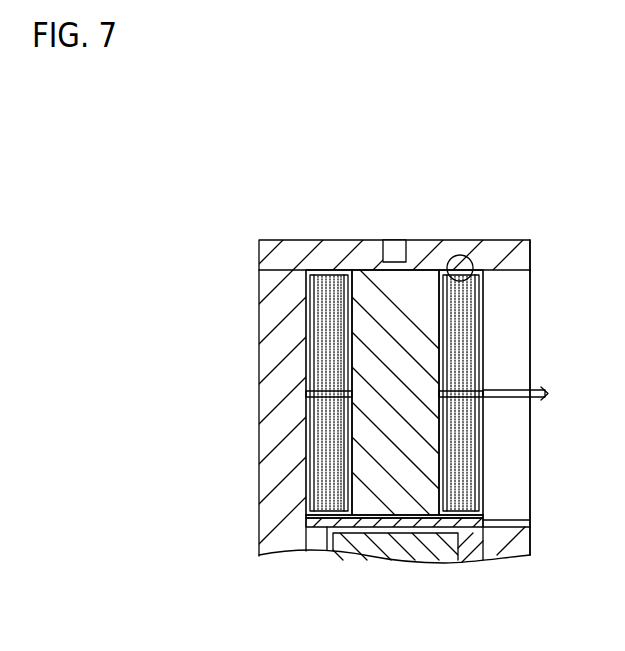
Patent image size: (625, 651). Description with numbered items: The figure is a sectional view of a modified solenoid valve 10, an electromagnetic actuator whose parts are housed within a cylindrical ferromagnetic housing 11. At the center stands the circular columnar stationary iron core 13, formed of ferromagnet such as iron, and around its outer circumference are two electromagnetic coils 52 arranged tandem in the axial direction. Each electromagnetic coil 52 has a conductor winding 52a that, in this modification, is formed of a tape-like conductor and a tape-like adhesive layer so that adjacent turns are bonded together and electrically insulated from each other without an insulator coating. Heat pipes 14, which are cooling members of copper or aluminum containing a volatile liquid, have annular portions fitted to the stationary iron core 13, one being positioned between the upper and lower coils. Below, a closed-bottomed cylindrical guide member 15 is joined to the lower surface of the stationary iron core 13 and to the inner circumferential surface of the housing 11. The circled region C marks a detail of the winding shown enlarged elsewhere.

The solenoid valve 10 is at (509, 235).
The housing 11 is at (532, 257).
The stationary iron core 13 is at (369, 288).
The heat pipe 14 is at (513, 390).
The guide member 15 is at (325, 540).
The electromagnetic coil 52 is at (303, 328).
The conductor winding 52a is at (308, 335).
The region C is at (458, 255).